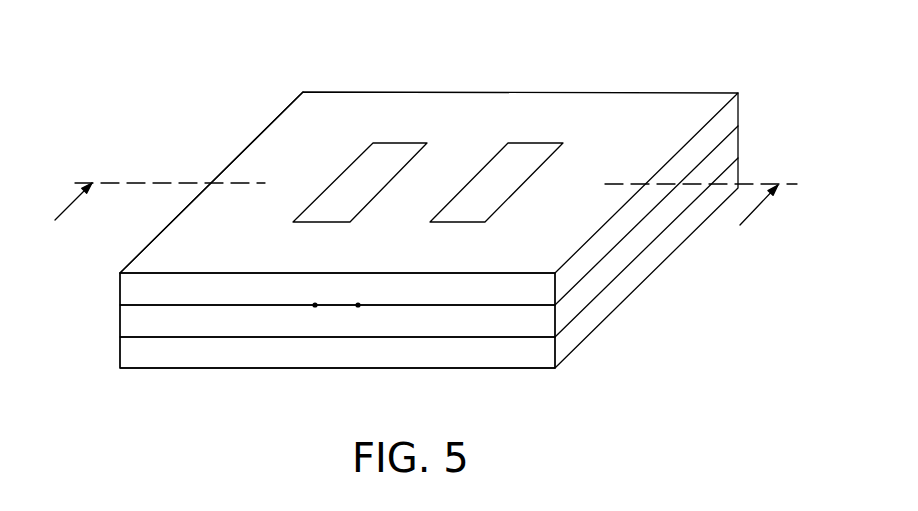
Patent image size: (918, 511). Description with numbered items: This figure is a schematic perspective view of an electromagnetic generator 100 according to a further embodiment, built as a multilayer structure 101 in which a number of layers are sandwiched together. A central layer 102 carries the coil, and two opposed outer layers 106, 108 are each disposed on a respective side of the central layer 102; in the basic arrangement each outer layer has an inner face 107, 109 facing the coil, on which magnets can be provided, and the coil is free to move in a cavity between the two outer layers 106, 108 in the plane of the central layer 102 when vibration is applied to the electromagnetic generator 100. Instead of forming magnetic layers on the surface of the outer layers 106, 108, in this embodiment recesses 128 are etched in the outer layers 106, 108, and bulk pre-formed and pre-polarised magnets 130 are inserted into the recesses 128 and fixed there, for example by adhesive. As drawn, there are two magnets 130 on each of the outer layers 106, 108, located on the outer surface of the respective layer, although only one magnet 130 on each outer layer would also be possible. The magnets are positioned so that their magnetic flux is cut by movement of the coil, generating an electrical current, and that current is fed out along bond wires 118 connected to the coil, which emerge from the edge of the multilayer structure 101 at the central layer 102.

The electromagnetic generator 100 is at (228, 122).
The multilayer structure 101 is at (150, 242).
The central layer 102 is at (118, 322).
The outer layer 106 is at (118, 290).
The inner face 107 is at (543, 306).
The outer layer 108 is at (118, 355).
The inner face 109 is at (543, 337).
The bond wires 118 is at (315, 305).
The recesses 128 is at (358, 160).
The magnets 130 is at (390, 152).